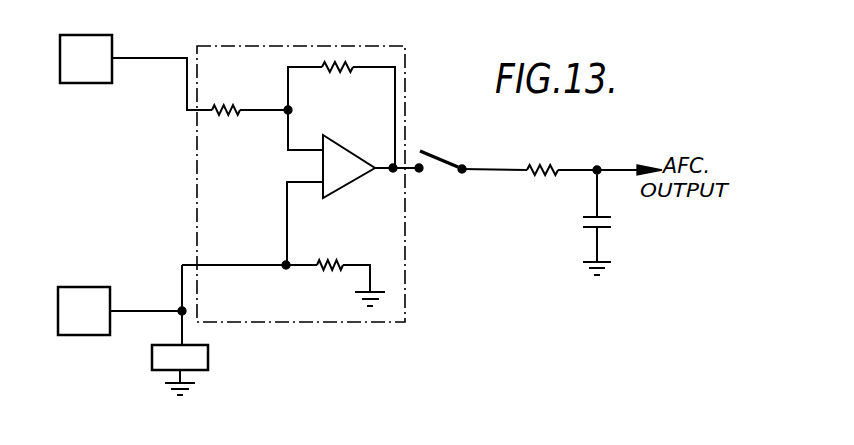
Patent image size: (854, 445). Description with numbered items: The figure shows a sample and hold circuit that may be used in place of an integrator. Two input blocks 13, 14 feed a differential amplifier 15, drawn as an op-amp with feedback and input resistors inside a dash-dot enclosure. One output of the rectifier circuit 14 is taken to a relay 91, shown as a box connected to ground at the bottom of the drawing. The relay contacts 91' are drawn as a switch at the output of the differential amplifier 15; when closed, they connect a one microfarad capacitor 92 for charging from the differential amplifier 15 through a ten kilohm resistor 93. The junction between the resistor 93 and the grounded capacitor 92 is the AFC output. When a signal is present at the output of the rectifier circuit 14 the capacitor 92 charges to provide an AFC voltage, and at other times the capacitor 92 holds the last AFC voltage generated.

The first input block 13 is at (88, 84).
The rectifier circuit 14 is at (80, 290).
The differential amplifier 15 is at (197, 178).
The relay 91 is at (206, 365).
The relay contacts 91' is at (471, 143).
The capacitor 92 is at (580, 230).
The resistor 93 is at (530, 168).